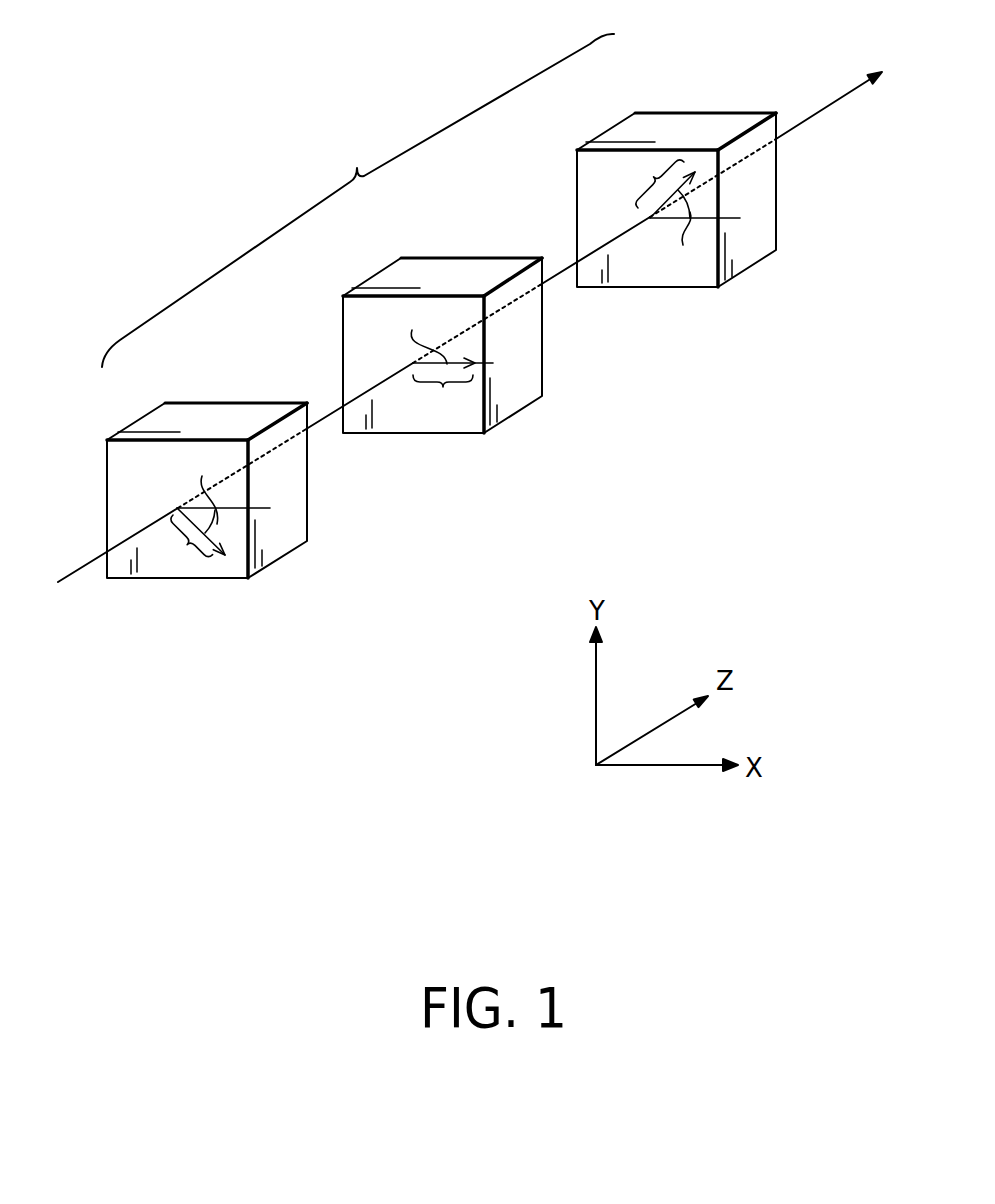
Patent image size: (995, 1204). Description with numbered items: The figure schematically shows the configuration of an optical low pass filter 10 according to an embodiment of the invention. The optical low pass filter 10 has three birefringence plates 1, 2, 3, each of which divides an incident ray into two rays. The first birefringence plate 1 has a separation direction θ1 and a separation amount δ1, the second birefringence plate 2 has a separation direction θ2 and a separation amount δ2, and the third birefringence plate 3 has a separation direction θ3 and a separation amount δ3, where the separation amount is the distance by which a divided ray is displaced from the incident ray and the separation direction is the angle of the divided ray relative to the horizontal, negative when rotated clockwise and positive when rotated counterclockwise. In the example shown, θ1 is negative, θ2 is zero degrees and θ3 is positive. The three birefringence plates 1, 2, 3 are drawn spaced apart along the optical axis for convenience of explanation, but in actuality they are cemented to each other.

The optical low pass filter 10 is at (358, 200).
The first birefringence plate 1 is at (164, 415).
The second birefringence plate 2 is at (400, 270).
The third birefringence plate 3 is at (635, 120).